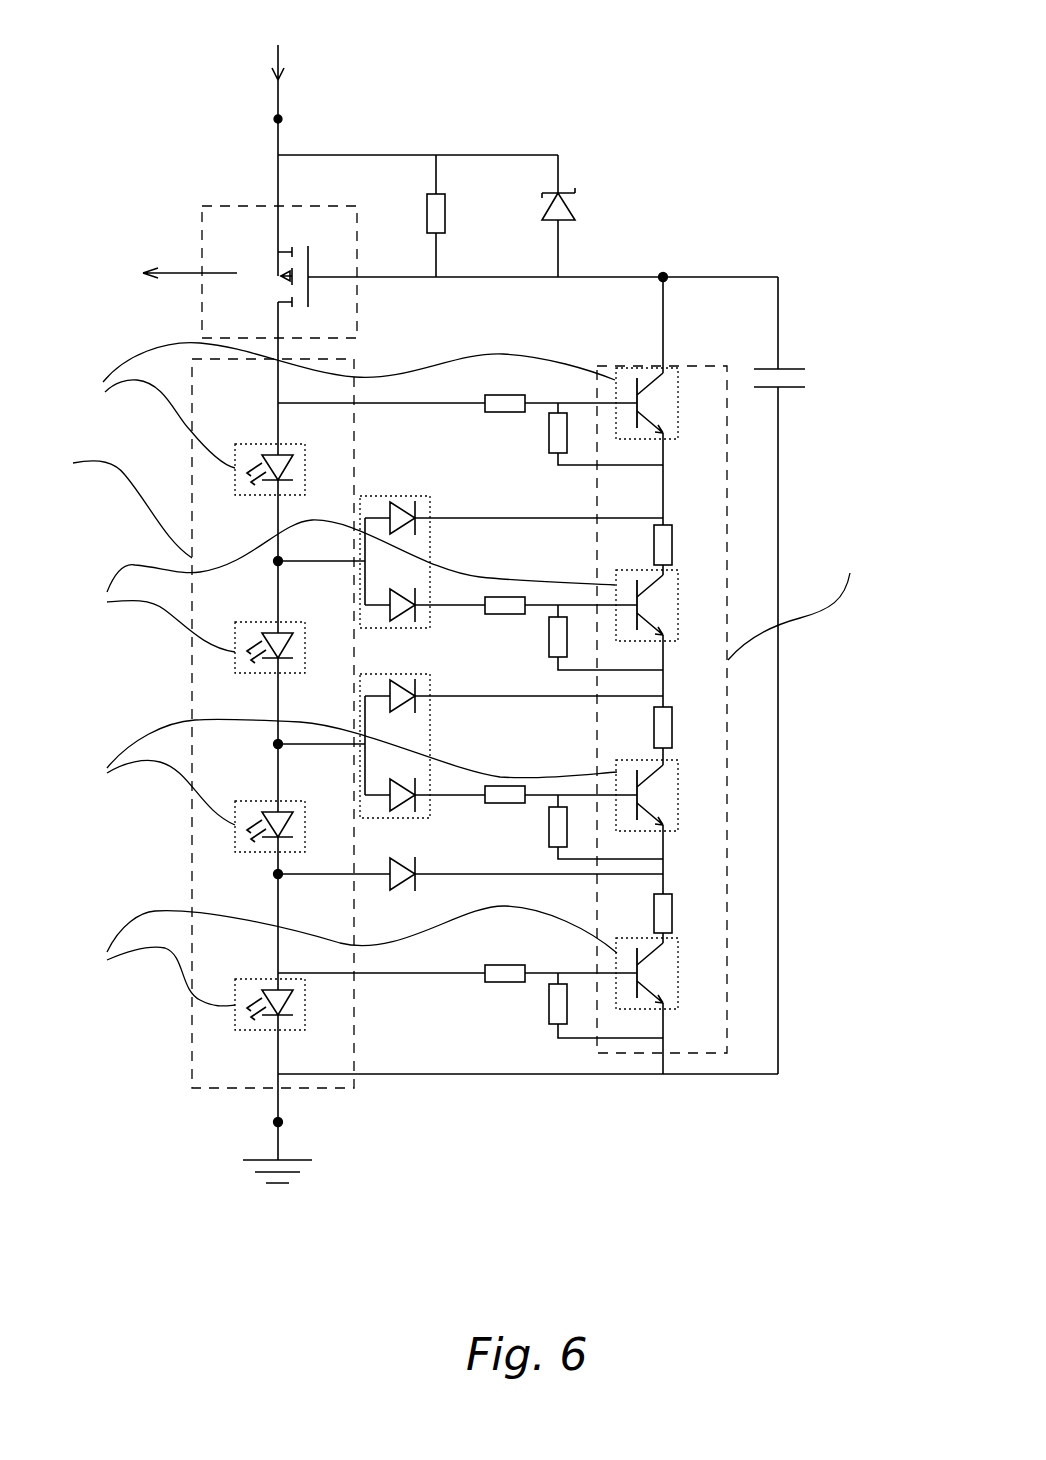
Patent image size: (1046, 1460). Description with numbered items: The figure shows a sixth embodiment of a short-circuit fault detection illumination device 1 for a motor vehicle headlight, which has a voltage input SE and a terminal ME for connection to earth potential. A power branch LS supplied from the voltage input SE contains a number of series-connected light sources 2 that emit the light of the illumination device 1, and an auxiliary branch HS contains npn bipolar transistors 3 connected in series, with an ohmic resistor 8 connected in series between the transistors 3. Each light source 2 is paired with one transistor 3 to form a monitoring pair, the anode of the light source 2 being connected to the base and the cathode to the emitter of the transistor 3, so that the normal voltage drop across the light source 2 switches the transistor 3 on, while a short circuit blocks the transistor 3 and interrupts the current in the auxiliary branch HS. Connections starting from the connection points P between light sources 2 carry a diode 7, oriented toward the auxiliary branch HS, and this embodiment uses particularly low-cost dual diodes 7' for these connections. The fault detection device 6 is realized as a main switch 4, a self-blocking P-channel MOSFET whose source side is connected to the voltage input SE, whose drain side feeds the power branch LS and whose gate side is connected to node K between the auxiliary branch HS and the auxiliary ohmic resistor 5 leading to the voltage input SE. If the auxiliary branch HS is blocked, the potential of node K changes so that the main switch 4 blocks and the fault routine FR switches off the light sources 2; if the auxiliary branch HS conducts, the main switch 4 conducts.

The short-circuit fault detection illumination device 1 is at (667, 125).
The light source 2 is at (272, 452).
The transistor 3 is at (678, 385).
The main switch 4 is at (280, 267).
The auxiliary ohmic resistor 5 is at (427, 212).
The fault detection device 6 is at (202, 246).
The diode 7 is at (368, 860).
The dual diode 7' is at (359, 657).
The resistor 8 is at (672, 542).